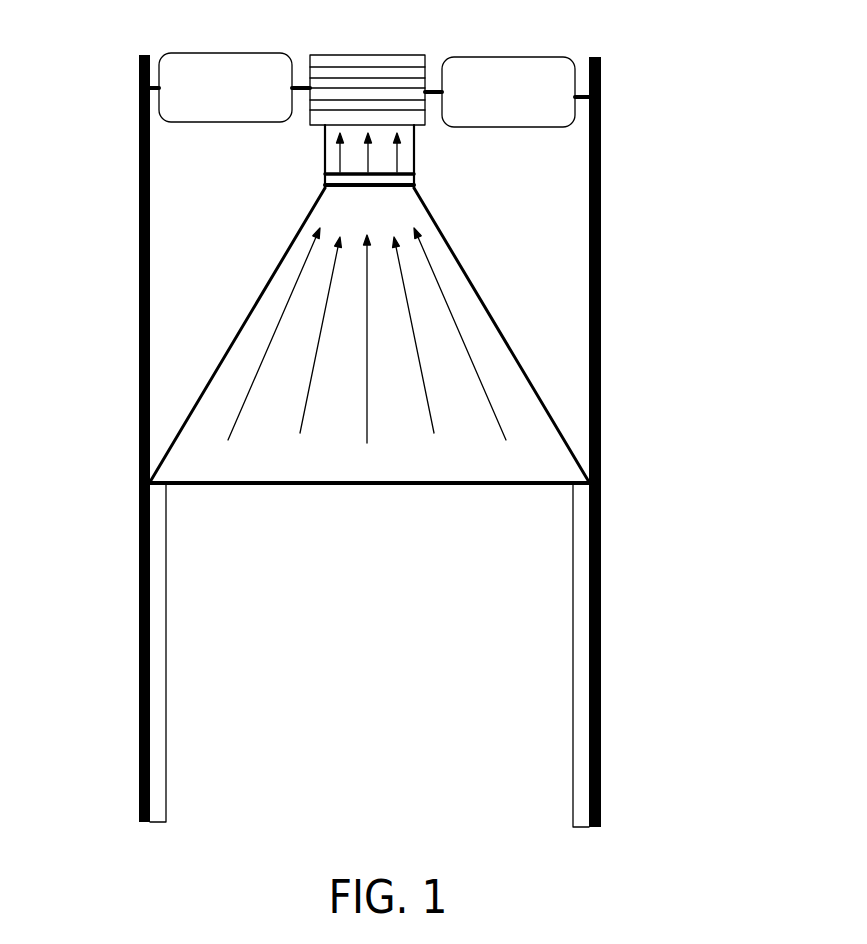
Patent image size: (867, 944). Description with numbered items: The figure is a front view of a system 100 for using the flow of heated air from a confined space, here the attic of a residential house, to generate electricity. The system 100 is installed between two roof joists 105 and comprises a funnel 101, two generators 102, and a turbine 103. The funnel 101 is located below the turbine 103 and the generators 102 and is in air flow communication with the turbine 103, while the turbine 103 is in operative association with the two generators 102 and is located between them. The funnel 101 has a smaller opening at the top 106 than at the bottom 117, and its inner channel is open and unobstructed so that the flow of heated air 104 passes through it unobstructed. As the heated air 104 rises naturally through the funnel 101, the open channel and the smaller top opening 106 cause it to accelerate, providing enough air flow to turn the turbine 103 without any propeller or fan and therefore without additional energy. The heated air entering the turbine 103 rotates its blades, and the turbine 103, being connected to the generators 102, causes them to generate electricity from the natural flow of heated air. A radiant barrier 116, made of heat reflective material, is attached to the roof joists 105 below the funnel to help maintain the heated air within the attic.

The system 100 is at (717, 368).
The funnel 101 is at (372, 393).
The generators 102 is at (265, 62).
The turbine 103 is at (387, 62).
The flow of heated air 104 is at (340, 161).
The roof joists 105 is at (140, 644).
The top opening of the funnel 106 is at (412, 174).
The radiant barrier 116 is at (158, 768).
The bottom opening of the funnel 117 is at (207, 483).